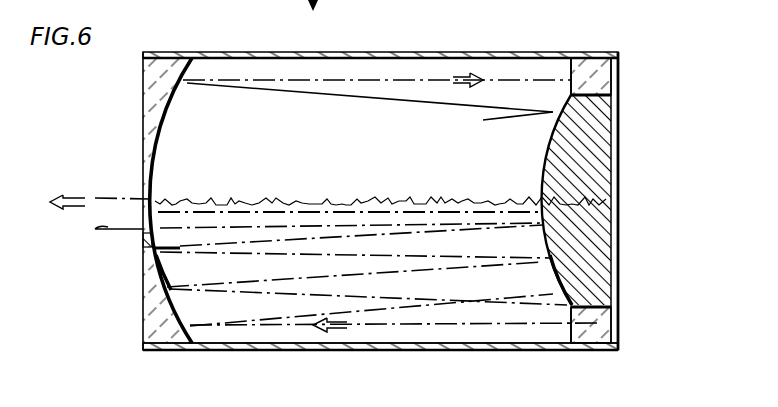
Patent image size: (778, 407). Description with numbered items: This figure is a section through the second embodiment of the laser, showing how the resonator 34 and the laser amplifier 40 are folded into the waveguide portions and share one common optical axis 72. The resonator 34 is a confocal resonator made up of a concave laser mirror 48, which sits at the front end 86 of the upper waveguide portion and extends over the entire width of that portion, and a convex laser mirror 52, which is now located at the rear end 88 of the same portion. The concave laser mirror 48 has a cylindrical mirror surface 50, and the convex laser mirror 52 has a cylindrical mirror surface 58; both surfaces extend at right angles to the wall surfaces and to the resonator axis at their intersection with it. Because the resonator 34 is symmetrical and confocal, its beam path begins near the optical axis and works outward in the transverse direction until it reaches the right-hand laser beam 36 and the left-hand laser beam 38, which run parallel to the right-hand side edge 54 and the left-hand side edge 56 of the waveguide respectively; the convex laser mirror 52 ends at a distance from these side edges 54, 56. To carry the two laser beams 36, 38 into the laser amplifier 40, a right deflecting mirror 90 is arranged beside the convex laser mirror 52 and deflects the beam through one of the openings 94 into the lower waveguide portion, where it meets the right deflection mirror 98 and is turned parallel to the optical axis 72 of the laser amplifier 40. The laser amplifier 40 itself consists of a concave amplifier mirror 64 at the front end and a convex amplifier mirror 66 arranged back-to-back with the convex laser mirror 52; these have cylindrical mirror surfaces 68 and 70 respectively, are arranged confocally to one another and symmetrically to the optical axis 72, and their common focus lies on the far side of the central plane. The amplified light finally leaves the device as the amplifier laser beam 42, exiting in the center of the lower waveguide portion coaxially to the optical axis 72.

The resonator 34 is at (257, 58).
The right-hand laser beam 36 is at (372, 82).
The left-hand laser beam 38 is at (500, 332).
The laser amplifier 40 is at (452, 325).
The amplifier laser beam 42 is at (84, 233).
The concave laser mirror 48 is at (152, 100).
The cylindrical mirror surface 50 is at (163, 134).
The convex laser mirror 52 is at (598, 155).
The right-hand side edge 54 is at (434, 52).
The left-hand side edge 56 is at (388, 343).
The cylindrical mirror surface 58 is at (548, 140).
The concave amplifier mirror 64 is at (155, 297).
The convex amplifier mirror 66 is at (582, 247).
The cylindrical mirror surface 68 is at (152, 270).
The cylindrical mirror surface 70 is at (563, 276).
The optical axis 72 is at (362, 196).
The front end 86 is at (143, 152).
The rear end 88 is at (618, 78).
The right deflecting mirror 90 is at (595, 68).
The openings 94 is at (574, 75).
The right deflection mirror 98 is at (598, 315).